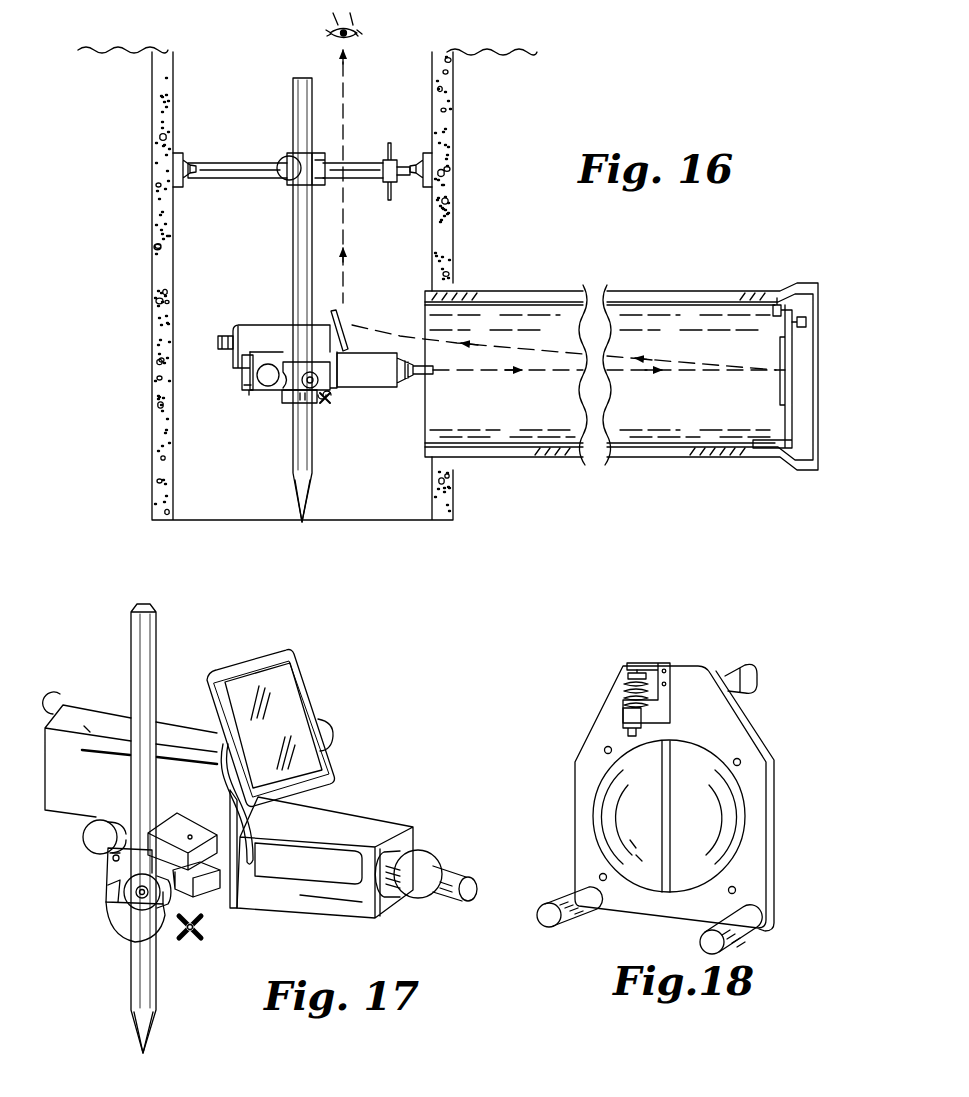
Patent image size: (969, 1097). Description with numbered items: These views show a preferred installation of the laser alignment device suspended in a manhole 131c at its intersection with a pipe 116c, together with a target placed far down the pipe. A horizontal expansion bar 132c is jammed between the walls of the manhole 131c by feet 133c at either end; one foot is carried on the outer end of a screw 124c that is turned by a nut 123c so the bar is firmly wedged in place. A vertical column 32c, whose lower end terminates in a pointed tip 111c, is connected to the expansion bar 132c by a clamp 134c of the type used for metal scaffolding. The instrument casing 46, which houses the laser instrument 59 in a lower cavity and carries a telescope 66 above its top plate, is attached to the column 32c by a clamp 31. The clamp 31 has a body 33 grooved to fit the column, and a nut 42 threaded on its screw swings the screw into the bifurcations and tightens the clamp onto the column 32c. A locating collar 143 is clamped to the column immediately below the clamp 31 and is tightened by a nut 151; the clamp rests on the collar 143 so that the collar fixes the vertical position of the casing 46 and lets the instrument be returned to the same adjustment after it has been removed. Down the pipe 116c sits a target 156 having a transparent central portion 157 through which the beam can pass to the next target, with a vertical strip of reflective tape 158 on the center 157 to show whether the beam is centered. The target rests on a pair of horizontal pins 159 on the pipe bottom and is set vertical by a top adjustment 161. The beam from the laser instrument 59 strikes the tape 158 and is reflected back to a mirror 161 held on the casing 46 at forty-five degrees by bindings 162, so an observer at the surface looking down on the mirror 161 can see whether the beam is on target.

In FIG. 16, the clamp 31 is at (283, 356).
In FIG. 17, the clamp 31 is at (104, 868).
In FIG. 16, the column 32c is at (293, 210).
In FIG. 17, the column 32c is at (157, 640).
In FIG. 17, the body 33 is at (180, 825).
In FIG. 17, the nut 42 is at (136, 892).
In FIG. 16, the casing 46 is at (242, 356).
In FIG. 17, the casing 46 is at (85, 724).
In FIG. 16, the laser instrument 59 is at (434, 372).
In FIG. 17, the laser instrument 59 is at (436, 890).
In FIG. 16, the telescope 66 is at (222, 336).
In FIG. 16, the pointed rod tip 111c is at (308, 490).
In FIG. 17, the pointed rod tip 111c is at (135, 1040).
In FIG. 16, the pipe 116c is at (528, 458).
In FIG. 16, the nut 123c is at (385, 160).
In FIG. 16, the screw 124c is at (400, 180).
In FIG. 16, the manhole 131c is at (448, 212).
In FIG. 16, the expansion bar 132c is at (204, 180).
In FIG. 16, the feet 133c is at (183, 163).
In FIG. 16, the clamp 134c is at (274, 143).
In FIG. 16, the locating collar 143 is at (275, 406).
In FIG. 17, the locating collar 143 is at (104, 935).
In FIG. 17, the nut 151 is at (197, 936).
In FIG. 16, the target 156 is at (826, 428).
In FIG. 18, the target 156 is at (797, 694).
In FIG. 18, the transparent central portion 157 is at (653, 832).
In FIG. 18, the reflective tape 158 is at (672, 783).
In FIG. 18, the horizontal pins 159 is at (568, 905).
In FIG. 16, the mirror 161 is at (343, 331).
In FIG. 17, the mirror 161 is at (281, 684).
In FIG. 18, the mirror 161 is at (650, 666).
In FIG. 17, the bindings 162 is at (224, 744).